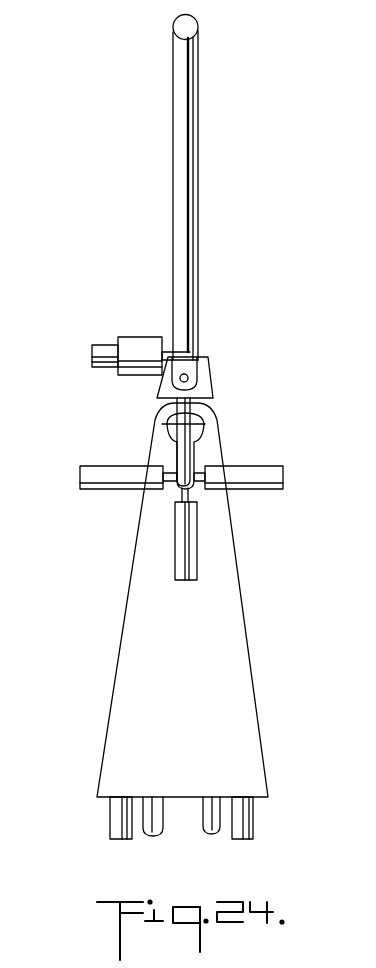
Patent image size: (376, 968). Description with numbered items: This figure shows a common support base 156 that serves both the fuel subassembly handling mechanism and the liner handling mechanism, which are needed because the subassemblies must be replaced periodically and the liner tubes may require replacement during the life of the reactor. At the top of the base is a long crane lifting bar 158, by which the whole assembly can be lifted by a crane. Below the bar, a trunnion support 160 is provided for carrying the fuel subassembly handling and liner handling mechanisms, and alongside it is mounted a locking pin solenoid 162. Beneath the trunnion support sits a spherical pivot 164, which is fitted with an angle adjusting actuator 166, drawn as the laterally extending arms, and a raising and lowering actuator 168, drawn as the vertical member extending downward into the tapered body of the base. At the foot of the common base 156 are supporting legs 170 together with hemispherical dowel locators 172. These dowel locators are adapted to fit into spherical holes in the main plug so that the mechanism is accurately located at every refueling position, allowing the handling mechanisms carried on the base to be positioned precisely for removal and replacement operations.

The common support base 156 is at (185, 451).
The crane lifting bar 158 is at (190, 88).
The trunnion support 160 is at (209, 390).
The locking pin solenoid 162 is at (130, 341).
The spherical pivot 164 is at (160, 423).
The angle adjusting actuator 166 is at (262, 481).
The raising and lowering actuator 168 is at (186, 572).
The supporting legs 170 is at (115, 825).
The hemispherical dowel locators 172 is at (212, 836).